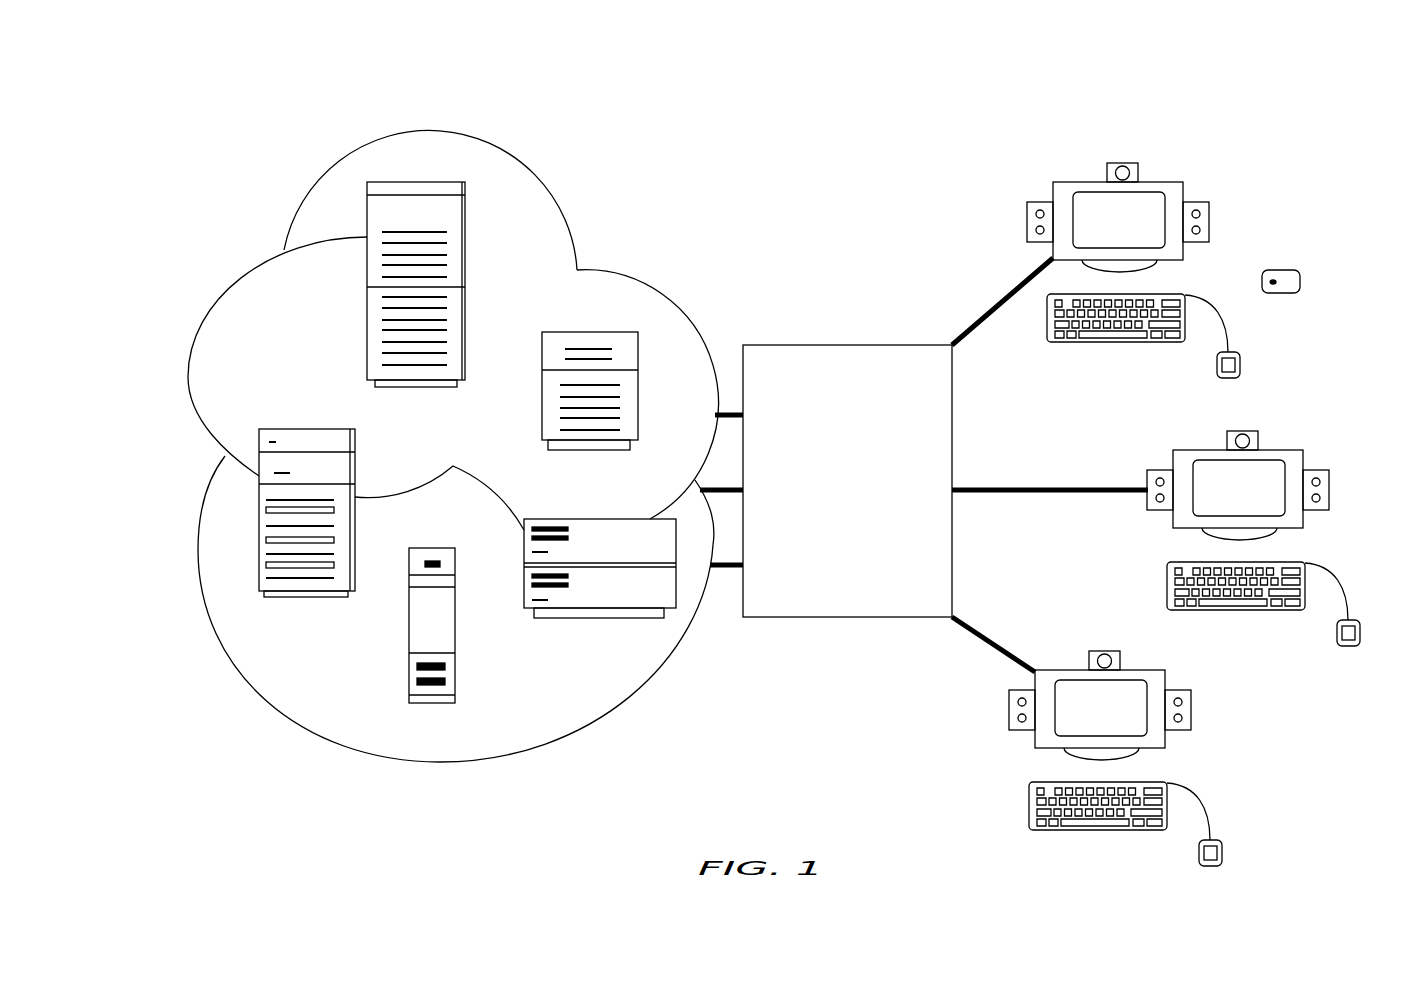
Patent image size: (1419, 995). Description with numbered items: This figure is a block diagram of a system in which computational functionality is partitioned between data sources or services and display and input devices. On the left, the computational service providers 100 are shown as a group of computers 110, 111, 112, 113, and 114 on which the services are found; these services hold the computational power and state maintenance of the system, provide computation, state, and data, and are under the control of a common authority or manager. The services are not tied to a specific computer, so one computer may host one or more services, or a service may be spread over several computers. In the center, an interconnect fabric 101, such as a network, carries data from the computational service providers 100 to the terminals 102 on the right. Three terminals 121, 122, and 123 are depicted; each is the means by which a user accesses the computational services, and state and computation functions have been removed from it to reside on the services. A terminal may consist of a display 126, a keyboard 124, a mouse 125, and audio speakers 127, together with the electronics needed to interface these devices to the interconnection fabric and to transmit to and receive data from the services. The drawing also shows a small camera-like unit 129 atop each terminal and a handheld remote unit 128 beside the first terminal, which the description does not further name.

The computational service providers 100 is at (718, 69).
The interconnect fabric 101 is at (833, 618).
The terminals 102 is at (1355, 78).
The computer 110 is at (465, 183).
The computer 111 is at (638, 333).
The computer 112 is at (676, 608).
The computer 113 is at (413, 703).
The computer 114 is at (259, 430).
The terminal 121 is at (1202, 263).
The terminal 122 is at (1257, 536).
The terminal 123 is at (1137, 758).
The keyboard 124 is at (1116, 347).
The mouse 125 is at (1259, 336).
The display 126 is at (1087, 187).
The audio speakers 127 is at (1244, 222).
The remote control 128 is at (1328, 282).
The camera 129 is at (1166, 154).